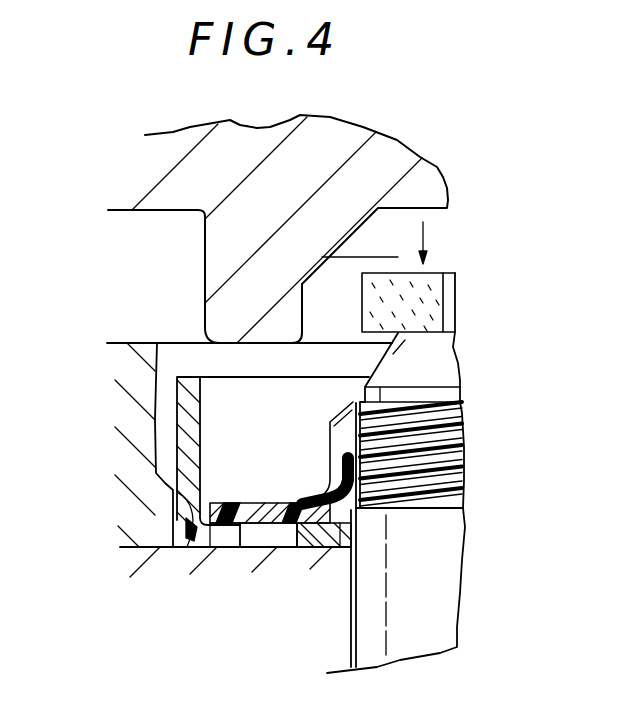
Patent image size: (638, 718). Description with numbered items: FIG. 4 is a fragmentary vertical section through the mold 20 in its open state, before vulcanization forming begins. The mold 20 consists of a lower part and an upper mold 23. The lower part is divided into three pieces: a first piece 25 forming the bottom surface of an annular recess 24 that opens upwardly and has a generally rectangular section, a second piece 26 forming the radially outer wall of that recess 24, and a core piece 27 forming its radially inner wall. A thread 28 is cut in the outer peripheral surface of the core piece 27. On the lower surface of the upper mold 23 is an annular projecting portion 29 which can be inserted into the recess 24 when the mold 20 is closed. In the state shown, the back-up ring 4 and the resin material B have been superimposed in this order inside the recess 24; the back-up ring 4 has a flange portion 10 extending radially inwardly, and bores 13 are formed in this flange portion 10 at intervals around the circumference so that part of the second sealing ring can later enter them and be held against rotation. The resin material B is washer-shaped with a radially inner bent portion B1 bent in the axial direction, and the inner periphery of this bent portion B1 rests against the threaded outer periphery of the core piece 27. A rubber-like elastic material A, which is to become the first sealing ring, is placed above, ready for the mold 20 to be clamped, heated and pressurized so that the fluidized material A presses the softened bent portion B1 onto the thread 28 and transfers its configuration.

The mold 20 is at (497, 198).
The upper mold 23 is at (152, 212).
The annular projecting portion 29 is at (205, 268).
The second piece 26 is at (125, 347).
The back-up ring 4 is at (187, 413).
The annular recess 24 is at (172, 492).
The first piece 25 is at (137, 543).
The thread 28 is at (443, 437).
The core piece 27 is at (437, 563).
The bores 13 is at (297, 523).
The flange portion 10 is at (323, 538).
The rubber-like elastic material A is at (455, 293).
The resin material B is at (277, 517).
The bent portion B1 is at (332, 455).